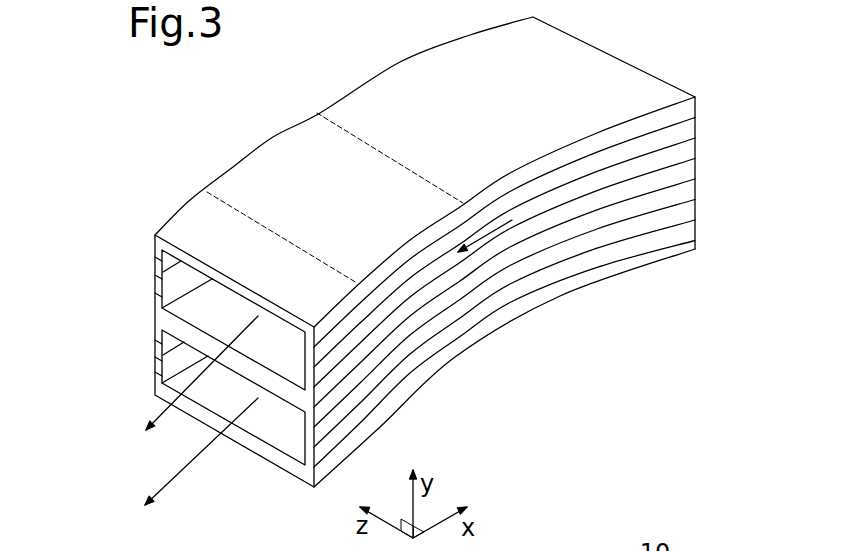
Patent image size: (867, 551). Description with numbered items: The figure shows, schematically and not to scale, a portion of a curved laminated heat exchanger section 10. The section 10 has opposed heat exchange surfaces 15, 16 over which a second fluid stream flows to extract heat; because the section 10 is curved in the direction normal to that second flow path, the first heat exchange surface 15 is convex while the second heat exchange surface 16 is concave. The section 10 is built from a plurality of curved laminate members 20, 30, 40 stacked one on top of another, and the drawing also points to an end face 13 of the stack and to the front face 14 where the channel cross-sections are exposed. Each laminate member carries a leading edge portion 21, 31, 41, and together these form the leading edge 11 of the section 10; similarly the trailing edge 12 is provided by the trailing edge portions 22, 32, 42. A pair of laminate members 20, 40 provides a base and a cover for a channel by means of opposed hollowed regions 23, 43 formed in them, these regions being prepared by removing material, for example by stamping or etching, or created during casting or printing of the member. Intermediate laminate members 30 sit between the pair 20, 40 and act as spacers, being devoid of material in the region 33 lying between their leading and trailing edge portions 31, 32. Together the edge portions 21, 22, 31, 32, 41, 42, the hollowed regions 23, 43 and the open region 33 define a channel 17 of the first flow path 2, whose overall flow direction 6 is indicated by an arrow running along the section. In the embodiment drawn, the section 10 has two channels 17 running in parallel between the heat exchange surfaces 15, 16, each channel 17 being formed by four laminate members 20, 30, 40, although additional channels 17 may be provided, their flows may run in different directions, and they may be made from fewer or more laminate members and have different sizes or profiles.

The curved laminated heat exchanger section 10 is at (663, 53).
The leading edge 11 is at (637, 283).
The trailing edge 12 is at (318, 98).
The end face 13 is at (697, 160).
The front end face with cavities 14 is at (140, 345).
The first heat exchange surface 15 is at (407, 102).
The second heat exchange surface 16 is at (550, 307).
The channel 17 is at (257, 423).
The first flow path 2 is at (157, 410).
The laminate member 20 is at (697, 243).
The leading edge portion 21 is at (505, 318).
The trailing edge portion 22 is at (152, 305).
The hollowed region 23 is at (297, 465).
The intermediate laminate member 30 is at (697, 222).
The leading edge portion 31 is at (460, 327).
The trailing edge portion 32 is at (152, 285).
The region devoid of material 33 is at (293, 448).
The laminate member 40 is at (697, 179).
The leading edge portion 41 is at (415, 328).
The trailing edge portion 42 is at (152, 245).
The hollowed region 43 is at (287, 410).
The overall flow direction 6 is at (512, 220).